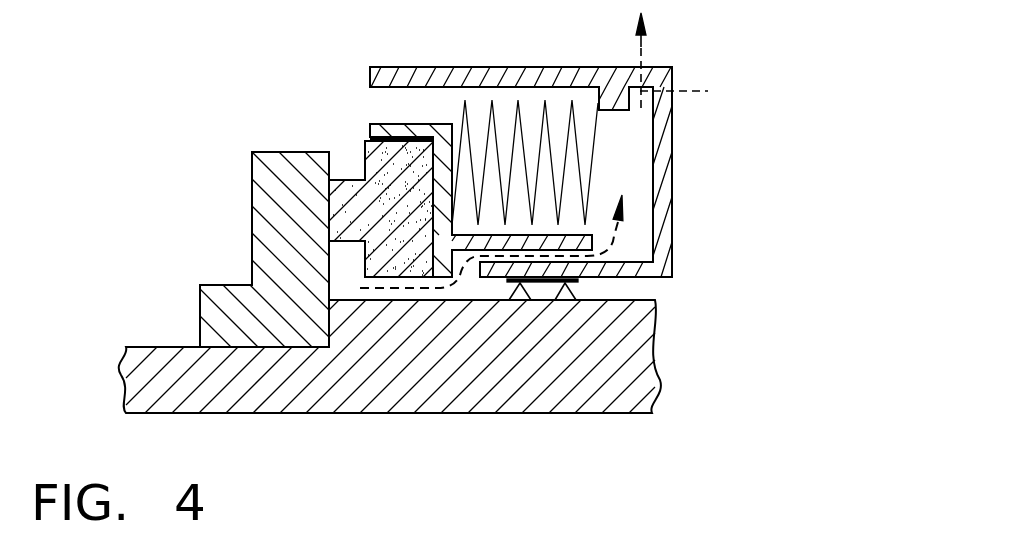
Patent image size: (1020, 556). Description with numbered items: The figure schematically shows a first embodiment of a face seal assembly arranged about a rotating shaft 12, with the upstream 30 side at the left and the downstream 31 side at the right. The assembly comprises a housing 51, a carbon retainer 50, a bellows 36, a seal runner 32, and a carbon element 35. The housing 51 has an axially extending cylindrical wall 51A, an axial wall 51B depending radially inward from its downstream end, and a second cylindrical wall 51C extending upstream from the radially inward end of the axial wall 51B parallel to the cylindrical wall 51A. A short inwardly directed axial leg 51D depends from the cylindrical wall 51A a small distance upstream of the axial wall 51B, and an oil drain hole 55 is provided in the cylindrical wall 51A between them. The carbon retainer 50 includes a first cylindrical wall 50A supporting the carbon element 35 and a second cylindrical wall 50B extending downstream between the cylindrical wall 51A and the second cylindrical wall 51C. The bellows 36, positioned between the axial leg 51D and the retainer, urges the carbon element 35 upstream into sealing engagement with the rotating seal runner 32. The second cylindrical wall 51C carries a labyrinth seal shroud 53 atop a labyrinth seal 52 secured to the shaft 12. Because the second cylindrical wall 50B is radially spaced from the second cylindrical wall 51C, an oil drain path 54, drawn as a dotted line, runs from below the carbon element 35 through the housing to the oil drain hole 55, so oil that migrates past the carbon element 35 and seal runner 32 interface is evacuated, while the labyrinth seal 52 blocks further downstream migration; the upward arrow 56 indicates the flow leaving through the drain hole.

The rotating shaft 12 is at (177, 367).
The upstream 30 is at (130, 208).
The downstream 31 is at (792, 206).
The seal runner 32 is at (252, 170).
The carbon element 35 is at (378, 167).
The bellows 36 is at (527, 133).
The carbon retainer 50 is at (430, 163).
The first cylindrical wall 50A is at (388, 130).
The second cylindrical wall 50B is at (540, 237).
The housing 51 is at (580, 168).
The cylindrical wall 51A is at (407, 78).
The axial wall 51B is at (665, 135).
The second cylindrical wall 51C is at (600, 272).
The axial leg 51D is at (617, 88).
The labyrinth seal 52 is at (515, 282).
The labyrinth seal shroud 53 is at (580, 282).
The oil drain path 54 is at (446, 293).
The oil drain hole 55 is at (693, 94).
The exhaust flow arrow 56 is at (645, 47).